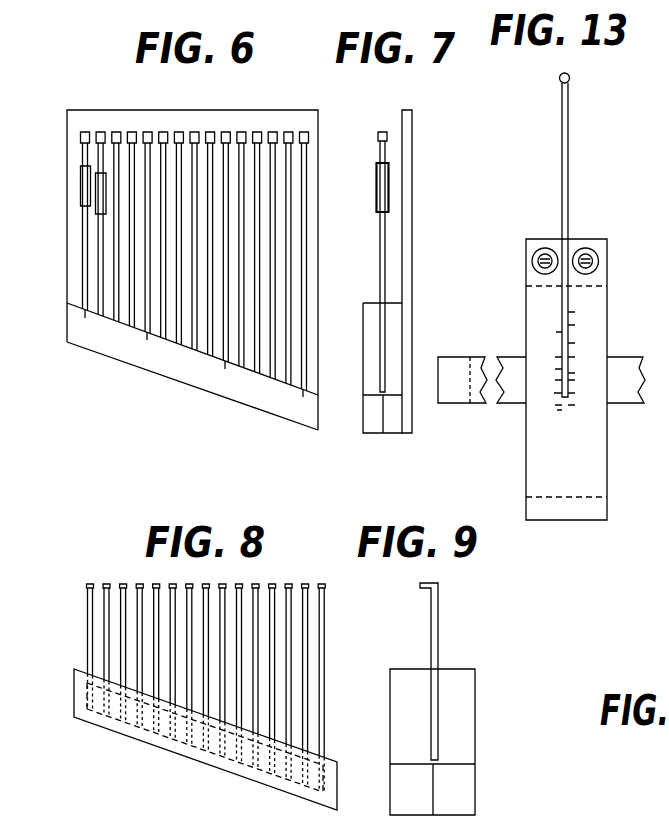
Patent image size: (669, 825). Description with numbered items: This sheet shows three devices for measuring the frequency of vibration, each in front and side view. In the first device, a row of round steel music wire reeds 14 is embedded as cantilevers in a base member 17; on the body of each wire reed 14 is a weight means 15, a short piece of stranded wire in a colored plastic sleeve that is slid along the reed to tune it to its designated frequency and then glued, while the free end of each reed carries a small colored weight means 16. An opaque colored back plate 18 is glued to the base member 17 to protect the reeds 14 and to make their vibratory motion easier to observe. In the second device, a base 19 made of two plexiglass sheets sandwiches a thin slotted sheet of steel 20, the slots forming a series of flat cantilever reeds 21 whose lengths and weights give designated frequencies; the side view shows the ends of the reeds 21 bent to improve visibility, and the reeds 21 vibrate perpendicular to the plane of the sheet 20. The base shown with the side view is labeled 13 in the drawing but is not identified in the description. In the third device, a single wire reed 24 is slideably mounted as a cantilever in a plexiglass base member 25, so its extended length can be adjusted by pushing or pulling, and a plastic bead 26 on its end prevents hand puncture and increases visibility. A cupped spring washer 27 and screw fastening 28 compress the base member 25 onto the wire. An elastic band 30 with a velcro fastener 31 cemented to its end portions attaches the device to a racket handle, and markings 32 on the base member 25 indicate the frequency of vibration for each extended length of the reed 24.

In FIG. 9, the base block 13 is at (475, 766).
In FIG. 6, the wire reed 14 is at (80, 238).
In FIG. 6, the weight means 15 is at (80, 183).
In FIG. 6, the colored weight means 16 is at (80, 135).
In FIG. 6, the base member 17 is at (170, 368).
In FIG. 6, the back plate 18 is at (183, 110).
In FIG. 7, the back plate 18 is at (412, 170).
In FIG. 8, the base 19 is at (74, 688).
In FIG. 8, the sheet of steel 20 is at (100, 722).
In FIG. 8, the flat reed 21 is at (88, 623).
In FIG. 13, the wire reed 24 is at (570, 126).
In FIG. 13, the base member 25 is at (545, 239).
In FIG. 13, the plastic bead 26 is at (570, 79).
In FIG. 13, the cupped spring washer 27 is at (585, 254).
In FIG. 13, the screw fastening 28 is at (592, 262).
In FIG. 13, the elastic band 30 is at (478, 357).
In FIG. 13, the velcro fastener 31 is at (447, 357).
In FIG. 13, the markings 32 is at (544, 326).